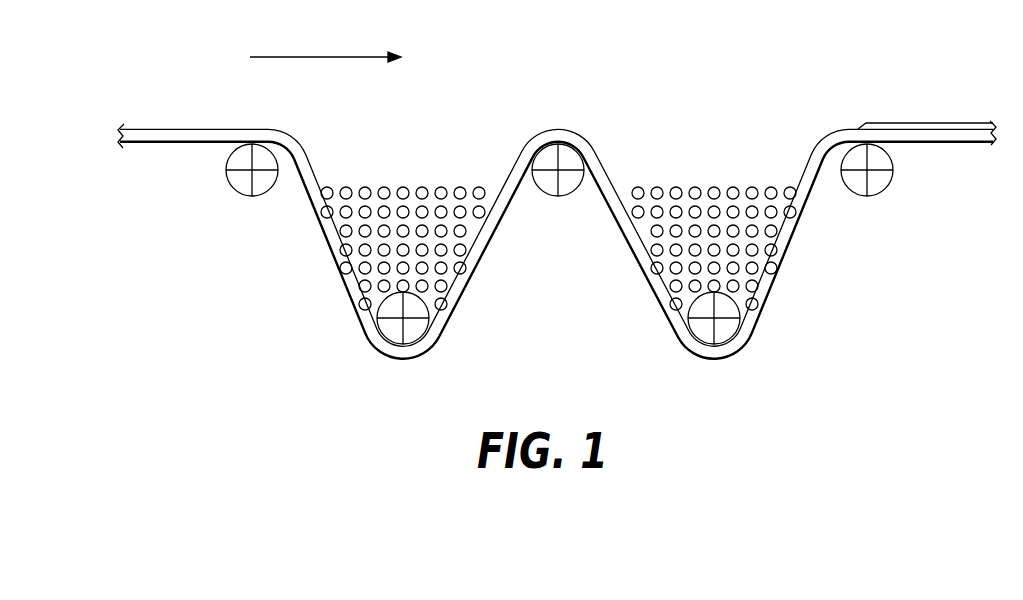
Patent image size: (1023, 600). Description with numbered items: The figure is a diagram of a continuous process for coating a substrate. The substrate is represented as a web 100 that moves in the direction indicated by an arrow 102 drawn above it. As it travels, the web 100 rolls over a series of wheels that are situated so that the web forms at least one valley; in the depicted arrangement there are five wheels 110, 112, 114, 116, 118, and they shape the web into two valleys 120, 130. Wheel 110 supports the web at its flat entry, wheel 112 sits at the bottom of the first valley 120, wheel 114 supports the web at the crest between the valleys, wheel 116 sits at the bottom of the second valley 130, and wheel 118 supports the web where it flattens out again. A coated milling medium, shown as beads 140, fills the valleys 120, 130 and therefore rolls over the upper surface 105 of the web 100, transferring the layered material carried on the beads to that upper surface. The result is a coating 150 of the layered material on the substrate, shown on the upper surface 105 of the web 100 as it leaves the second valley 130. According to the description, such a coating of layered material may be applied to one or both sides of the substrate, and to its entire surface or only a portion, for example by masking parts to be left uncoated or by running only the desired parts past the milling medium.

The web 100 is at (560, 207).
The arrow 102 is at (308, 55).
The upper surface 105 is at (216, 128).
The wheel 110 is at (237, 188).
The wheel 112 is at (388, 331).
The wheel 114 is at (548, 186).
The wheel 116 is at (701, 331).
The wheel 118 is at (875, 192).
The valley 120 is at (367, 144).
The valley 130 is at (685, 144).
The beads 140 is at (558, 195).
The coating 150 is at (913, 123).